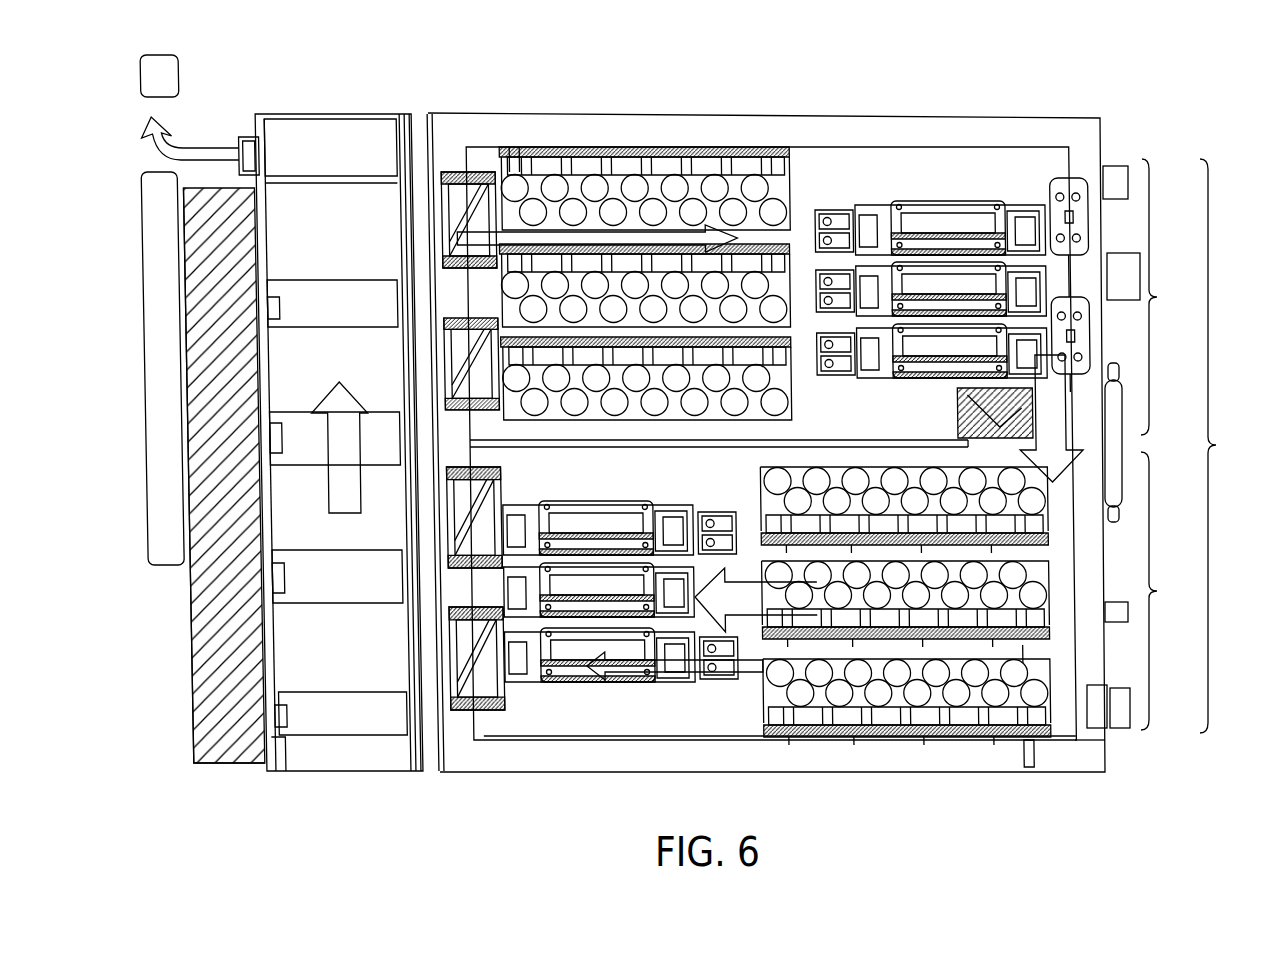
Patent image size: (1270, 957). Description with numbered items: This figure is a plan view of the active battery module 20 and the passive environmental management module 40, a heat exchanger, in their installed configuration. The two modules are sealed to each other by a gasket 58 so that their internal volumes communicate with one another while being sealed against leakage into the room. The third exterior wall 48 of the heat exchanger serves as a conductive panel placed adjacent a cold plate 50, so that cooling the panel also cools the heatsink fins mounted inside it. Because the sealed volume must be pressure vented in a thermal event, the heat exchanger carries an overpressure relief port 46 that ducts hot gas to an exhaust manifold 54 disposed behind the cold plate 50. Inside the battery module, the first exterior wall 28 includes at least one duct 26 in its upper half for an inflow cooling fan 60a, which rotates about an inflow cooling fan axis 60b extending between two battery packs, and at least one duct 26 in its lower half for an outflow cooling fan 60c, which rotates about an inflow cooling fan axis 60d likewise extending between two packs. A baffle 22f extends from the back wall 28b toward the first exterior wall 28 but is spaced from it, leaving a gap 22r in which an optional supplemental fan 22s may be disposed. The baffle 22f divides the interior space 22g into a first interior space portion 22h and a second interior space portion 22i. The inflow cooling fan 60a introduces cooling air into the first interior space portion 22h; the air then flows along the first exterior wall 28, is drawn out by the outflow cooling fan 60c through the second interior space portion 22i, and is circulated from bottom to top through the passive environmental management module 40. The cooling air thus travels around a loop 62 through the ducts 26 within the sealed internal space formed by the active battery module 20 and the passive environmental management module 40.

The active battery module 20 is at (907, 106).
The baffle 22f is at (775, 428).
The interior space 22g is at (1181, 446).
The first interior space portion 22h is at (1151, 297).
The second interior space portion 22i is at (1137, 591).
The gap 22r is at (968, 448).
The supplemental fan 22s is at (963, 393).
The duct 26 is at (438, 706).
The first exterior wall 28 is at (1107, 742).
The back wall 28b is at (433, 142).
The passive environmental management module 40 is at (310, 99).
The overpressure relief port 46 is at (251, 132).
The third exterior wall 48 is at (243, 680).
The cold plate 50 is at (215, 673).
The exhaust manifold 54 is at (163, 560).
The gasket 58 is at (416, 130).
The inflow cooling fan 60a is at (514, 147).
The inflow cooling fan axis 60b is at (561, 145).
The outflow cooling fan 60c is at (473, 710).
The inflow cooling fan axis 60d is at (676, 690).
The loop 62 is at (697, 452).